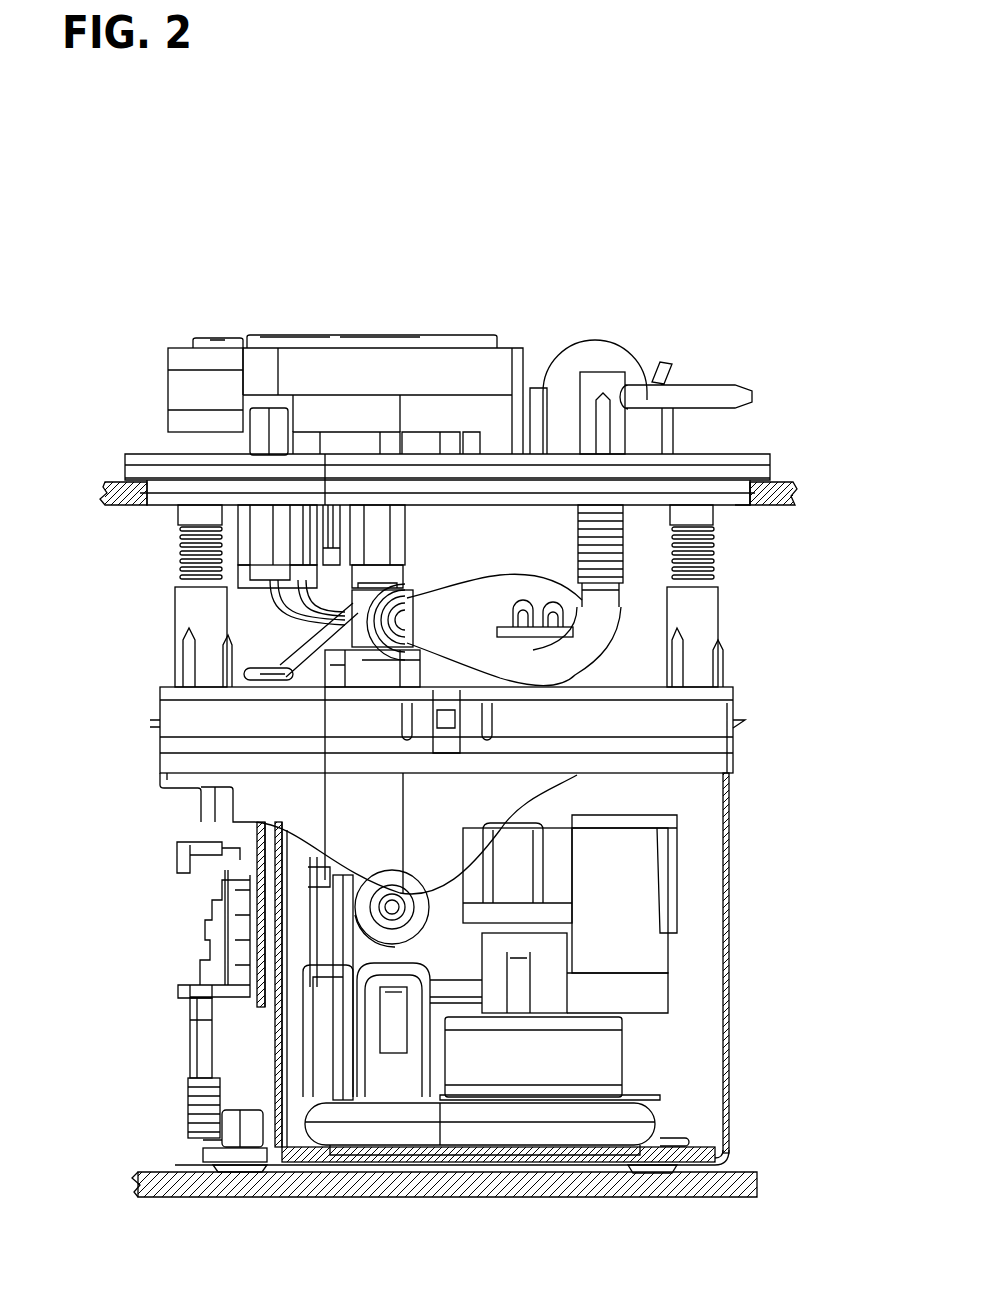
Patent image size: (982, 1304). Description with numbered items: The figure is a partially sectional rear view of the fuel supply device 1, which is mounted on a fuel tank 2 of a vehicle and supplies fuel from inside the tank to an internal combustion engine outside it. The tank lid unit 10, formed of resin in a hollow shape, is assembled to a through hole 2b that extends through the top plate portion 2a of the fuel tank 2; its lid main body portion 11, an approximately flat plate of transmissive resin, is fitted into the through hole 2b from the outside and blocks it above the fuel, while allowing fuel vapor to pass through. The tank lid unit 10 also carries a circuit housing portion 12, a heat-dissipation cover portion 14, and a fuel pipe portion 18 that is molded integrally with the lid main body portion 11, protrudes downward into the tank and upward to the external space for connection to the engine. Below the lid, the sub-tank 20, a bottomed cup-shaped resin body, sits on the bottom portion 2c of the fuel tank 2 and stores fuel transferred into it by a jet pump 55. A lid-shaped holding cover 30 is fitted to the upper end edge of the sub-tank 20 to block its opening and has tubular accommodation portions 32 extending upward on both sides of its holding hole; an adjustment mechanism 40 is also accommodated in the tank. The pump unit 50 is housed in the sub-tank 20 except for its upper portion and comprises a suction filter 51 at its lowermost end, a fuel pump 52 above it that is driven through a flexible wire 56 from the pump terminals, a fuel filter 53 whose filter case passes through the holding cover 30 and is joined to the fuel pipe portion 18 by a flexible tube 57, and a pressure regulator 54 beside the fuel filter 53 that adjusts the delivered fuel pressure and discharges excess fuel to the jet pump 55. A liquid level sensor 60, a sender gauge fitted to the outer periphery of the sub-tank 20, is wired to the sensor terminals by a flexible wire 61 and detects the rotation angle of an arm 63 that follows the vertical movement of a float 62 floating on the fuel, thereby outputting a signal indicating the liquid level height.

The fuel supply device 1 is at (122, 320).
The fuel tank 2 is at (733, 1186).
The top plate portion 2a is at (790, 486).
The through hole 2b is at (735, 508).
The bottom portion 2c is at (145, 1185).
The tank lid unit 10 is at (772, 450).
The lid main body portion 11 is at (155, 463).
The circuit housing portion 12 is at (497, 368).
The heat-dissipation cover portion 14 is at (437, 340).
The fuel pipe portion 18 is at (670, 370).
The sub-tank 20 is at (729, 985).
The holding cover 30 is at (735, 710).
The accommodation portions 32 is at (185, 672).
The adjustment mechanism 40 is at (178, 545).
The pump unit 50 is at (676, 931).
The suction filter 51 is at (650, 1113).
The fuel pump 52 is at (610, 1050).
The fuel filter 53 is at (670, 665).
The pressure regulator 54 is at (390, 1075).
The jet pump 55 is at (320, 970).
The flexible wire 56 is at (555, 603).
The flexible tube 57 is at (583, 660).
The liquid level sensor 60 is at (182, 953).
The flexible wire 61 is at (300, 655).
The float 62 is at (200, 1105).
The arm 63 is at (193, 1045).